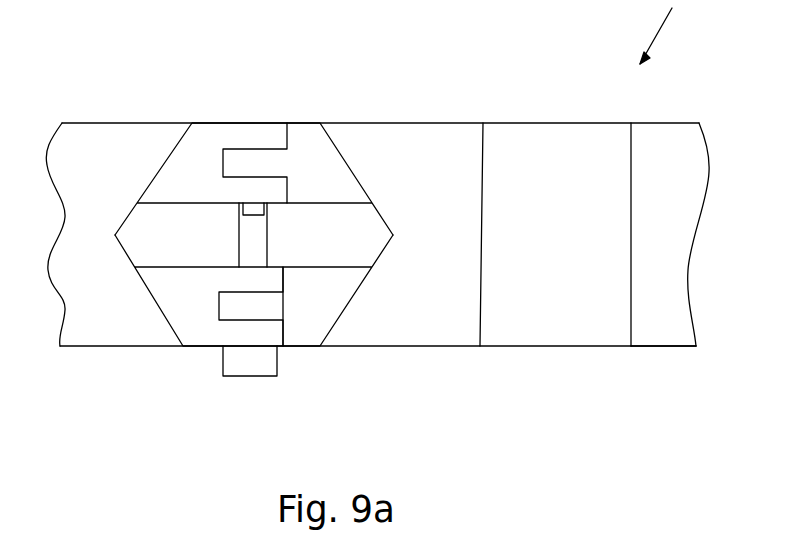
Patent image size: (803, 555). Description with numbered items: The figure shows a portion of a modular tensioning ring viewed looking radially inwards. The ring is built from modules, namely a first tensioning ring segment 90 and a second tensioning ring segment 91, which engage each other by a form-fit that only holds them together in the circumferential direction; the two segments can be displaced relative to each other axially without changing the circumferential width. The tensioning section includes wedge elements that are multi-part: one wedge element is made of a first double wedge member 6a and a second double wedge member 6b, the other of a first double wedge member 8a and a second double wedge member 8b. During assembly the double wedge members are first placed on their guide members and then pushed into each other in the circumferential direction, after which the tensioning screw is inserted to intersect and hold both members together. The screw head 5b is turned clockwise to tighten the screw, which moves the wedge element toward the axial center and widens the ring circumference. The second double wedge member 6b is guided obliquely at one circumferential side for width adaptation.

The second double wedge member 8b is at (205, 167).
The first double wedge member 8a is at (307, 167).
The first double wedge member 6a is at (194, 302).
The second double wedge member 6b is at (312, 300).
The screw head 5b is at (250, 362).
The first tensioning ring segment 90 is at (525, 272).
The second tensioning ring segment 91 is at (665, 298).